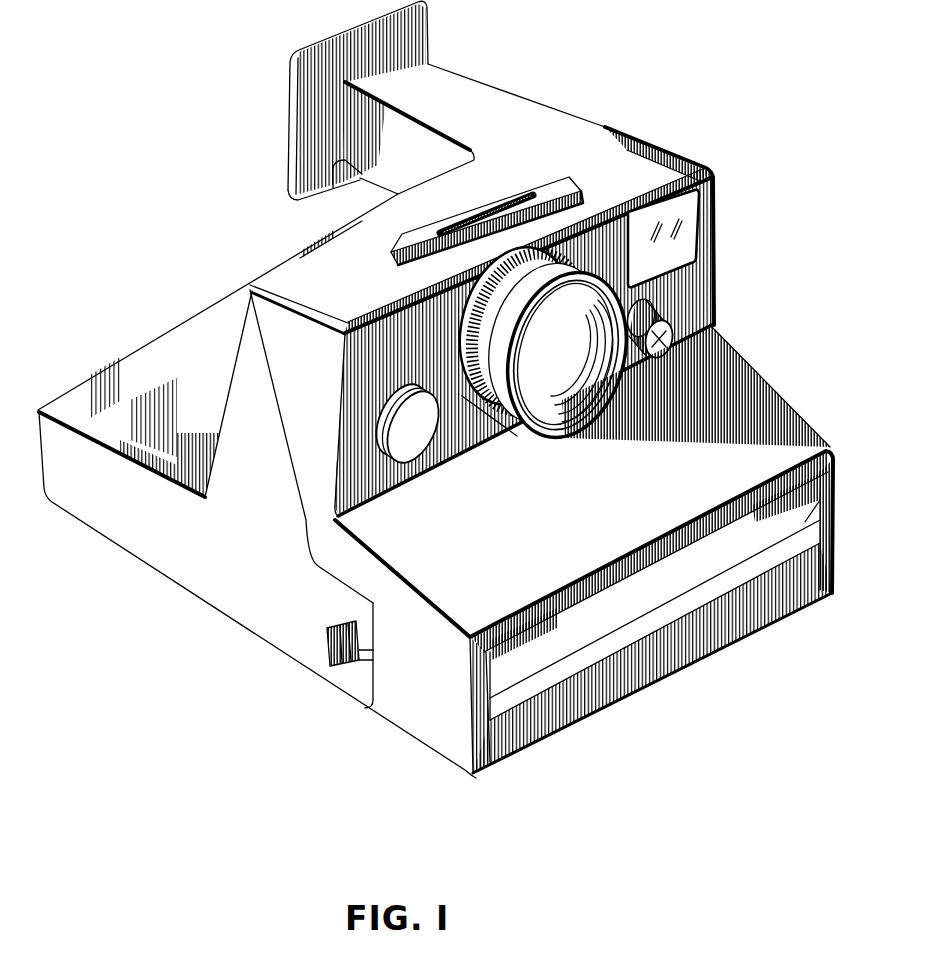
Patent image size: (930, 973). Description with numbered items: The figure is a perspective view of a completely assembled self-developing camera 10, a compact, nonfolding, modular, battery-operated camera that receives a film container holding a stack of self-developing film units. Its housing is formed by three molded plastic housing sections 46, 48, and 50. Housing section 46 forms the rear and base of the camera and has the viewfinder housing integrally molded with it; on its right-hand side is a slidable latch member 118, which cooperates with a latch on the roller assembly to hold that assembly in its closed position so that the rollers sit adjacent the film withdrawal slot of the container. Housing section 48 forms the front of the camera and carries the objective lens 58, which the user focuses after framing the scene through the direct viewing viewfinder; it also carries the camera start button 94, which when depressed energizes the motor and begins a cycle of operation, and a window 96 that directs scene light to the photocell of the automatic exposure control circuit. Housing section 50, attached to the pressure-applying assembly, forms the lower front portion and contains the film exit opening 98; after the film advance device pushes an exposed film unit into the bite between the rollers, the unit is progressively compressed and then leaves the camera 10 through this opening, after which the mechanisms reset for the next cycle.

The self-developing camera 10 is at (638, 122).
The housing section 46 is at (238, 613).
The housing section 48 is at (760, 421).
The housing section 50 is at (405, 745).
The objective lens 58 is at (549, 380).
The camera start button 94 is at (408, 438).
The window 96 is at (677, 333).
The film exit opening 98 is at (563, 670).
The slidable latch member 118 is at (328, 668).